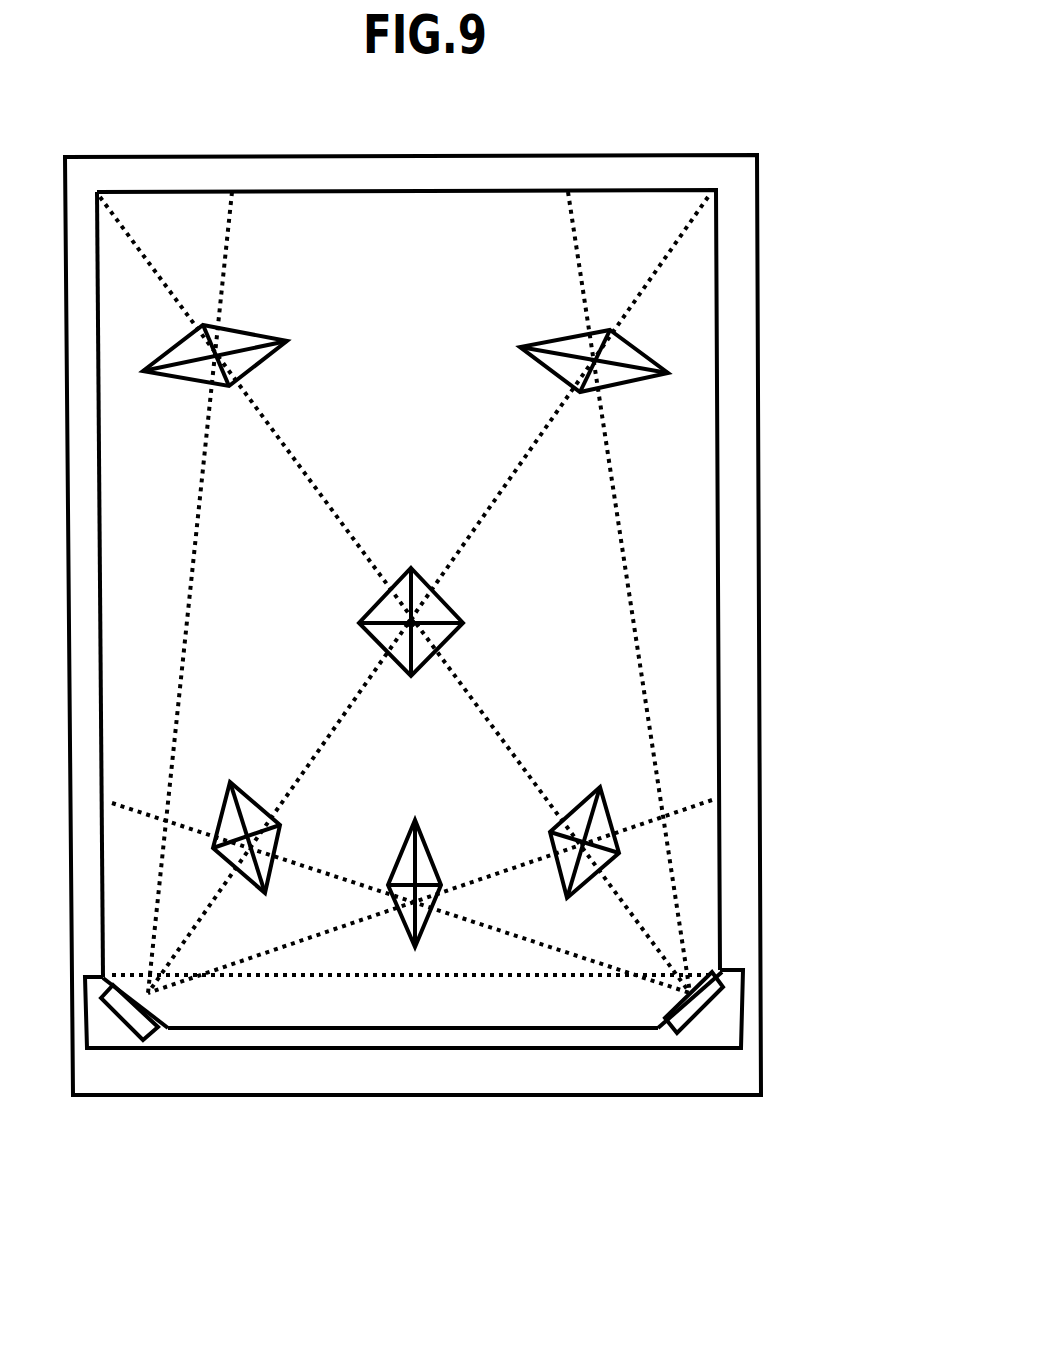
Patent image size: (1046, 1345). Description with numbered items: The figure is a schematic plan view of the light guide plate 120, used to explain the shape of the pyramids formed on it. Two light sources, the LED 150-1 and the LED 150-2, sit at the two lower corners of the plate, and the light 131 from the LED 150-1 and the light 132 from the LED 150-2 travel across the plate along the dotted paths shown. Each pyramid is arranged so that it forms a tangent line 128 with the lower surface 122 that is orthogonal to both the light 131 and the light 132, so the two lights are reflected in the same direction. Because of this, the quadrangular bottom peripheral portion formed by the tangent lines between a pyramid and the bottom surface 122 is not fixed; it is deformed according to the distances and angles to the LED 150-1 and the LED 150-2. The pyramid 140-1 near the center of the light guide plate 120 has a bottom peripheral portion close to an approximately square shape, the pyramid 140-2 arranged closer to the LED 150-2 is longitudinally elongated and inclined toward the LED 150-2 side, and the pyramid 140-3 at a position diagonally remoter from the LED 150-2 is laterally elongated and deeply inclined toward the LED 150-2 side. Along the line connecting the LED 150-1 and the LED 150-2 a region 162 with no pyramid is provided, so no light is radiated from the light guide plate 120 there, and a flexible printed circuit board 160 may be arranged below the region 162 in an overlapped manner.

The light guide plate 120 is at (708, 318).
The lower surface 122 is at (695, 482).
The tangent line 128 is at (405, 597).
The light from the LED 150-1 131 is at (630, 600).
The light from the LED 150-2 132 is at (190, 606).
The pyramid 140-1 is at (383, 637).
The pyramid 140-2 is at (260, 800).
The pyramid 140-3 is at (553, 345).
The LED 150-1 is at (693, 1010).
The LED 150-2 is at (140, 1015).
The flexible printed circuit board 160 is at (247, 1030).
The region 162 is at (415, 1000).